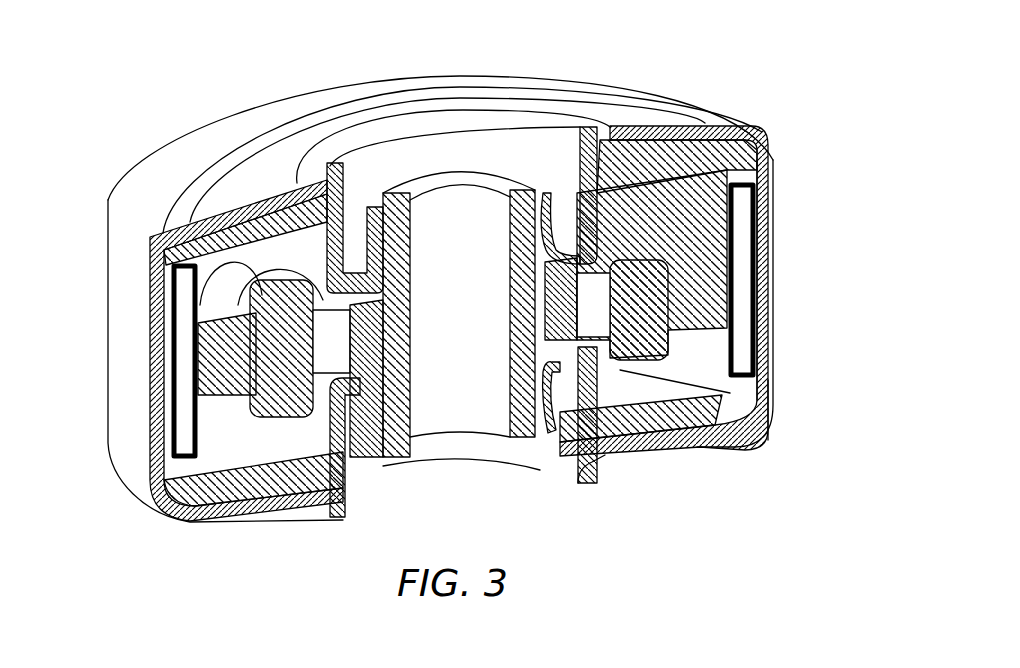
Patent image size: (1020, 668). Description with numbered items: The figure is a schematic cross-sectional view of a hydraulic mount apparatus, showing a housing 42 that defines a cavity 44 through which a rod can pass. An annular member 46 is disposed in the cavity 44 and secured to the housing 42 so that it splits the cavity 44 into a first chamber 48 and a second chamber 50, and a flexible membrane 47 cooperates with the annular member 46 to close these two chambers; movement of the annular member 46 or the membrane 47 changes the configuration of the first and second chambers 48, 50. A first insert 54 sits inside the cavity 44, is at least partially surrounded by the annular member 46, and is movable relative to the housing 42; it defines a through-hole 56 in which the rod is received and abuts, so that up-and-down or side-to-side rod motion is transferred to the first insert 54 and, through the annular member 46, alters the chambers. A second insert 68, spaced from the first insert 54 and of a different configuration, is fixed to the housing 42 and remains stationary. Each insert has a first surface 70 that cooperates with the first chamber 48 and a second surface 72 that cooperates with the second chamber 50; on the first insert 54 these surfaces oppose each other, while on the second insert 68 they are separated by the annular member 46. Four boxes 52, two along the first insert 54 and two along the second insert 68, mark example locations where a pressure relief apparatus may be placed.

The housing 42 is at (707, 110).
The cavity 44 is at (772, 384).
The annular member 46 is at (217, 325).
The membrane 47 is at (348, 253).
The first chamber 48 is at (222, 256).
The second chamber 50 is at (217, 458).
The boxes 52 is at (757, 237).
The first insert 54 is at (368, 340).
The through-hole 56 is at (457, 208).
The second insert 68 is at (763, 311).
The first surface 70 is at (712, 198).
The second surface 72 is at (567, 345).